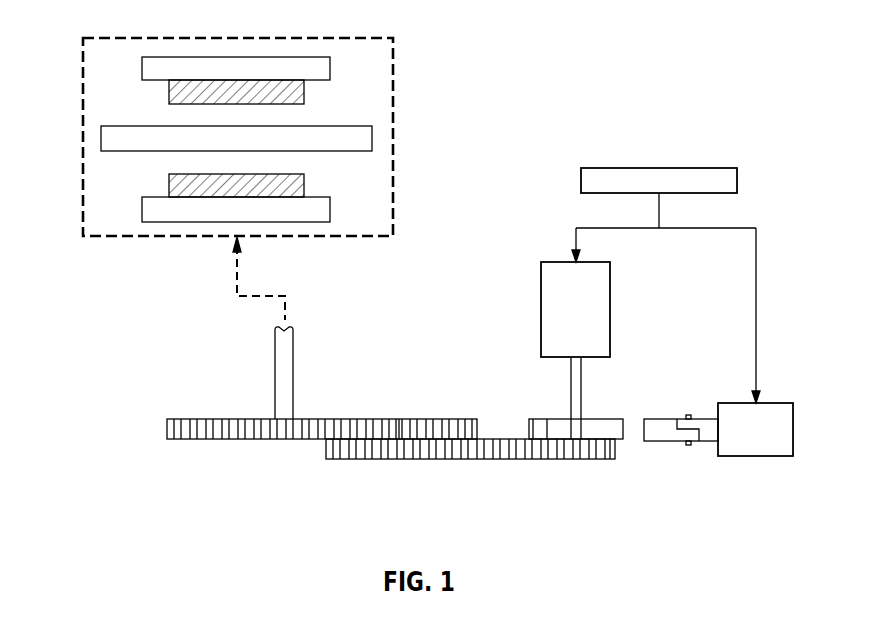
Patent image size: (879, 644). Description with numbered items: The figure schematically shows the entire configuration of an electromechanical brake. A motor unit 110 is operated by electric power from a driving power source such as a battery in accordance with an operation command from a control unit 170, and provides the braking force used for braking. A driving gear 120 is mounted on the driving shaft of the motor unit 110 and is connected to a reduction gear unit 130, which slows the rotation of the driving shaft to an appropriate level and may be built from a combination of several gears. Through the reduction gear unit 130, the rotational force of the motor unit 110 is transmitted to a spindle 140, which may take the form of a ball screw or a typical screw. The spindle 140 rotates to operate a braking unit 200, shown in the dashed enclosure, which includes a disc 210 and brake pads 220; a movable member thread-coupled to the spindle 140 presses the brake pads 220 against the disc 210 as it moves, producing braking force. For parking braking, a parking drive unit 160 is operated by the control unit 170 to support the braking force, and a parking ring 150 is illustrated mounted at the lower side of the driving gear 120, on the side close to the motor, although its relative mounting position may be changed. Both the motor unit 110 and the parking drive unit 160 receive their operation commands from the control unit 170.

The motor unit 110 is at (541, 282).
The driving gear 120 is at (596, 466).
The reduction gear unit 130 is at (387, 466).
The spindle 140 is at (282, 393).
The parking ring 150 is at (552, 419).
The parking drive unit 160 is at (778, 403).
The control unit 170 is at (679, 168).
The braking unit 200 is at (124, 238).
The disc 210 is at (116, 141).
The brake pads 220 is at (304, 186).